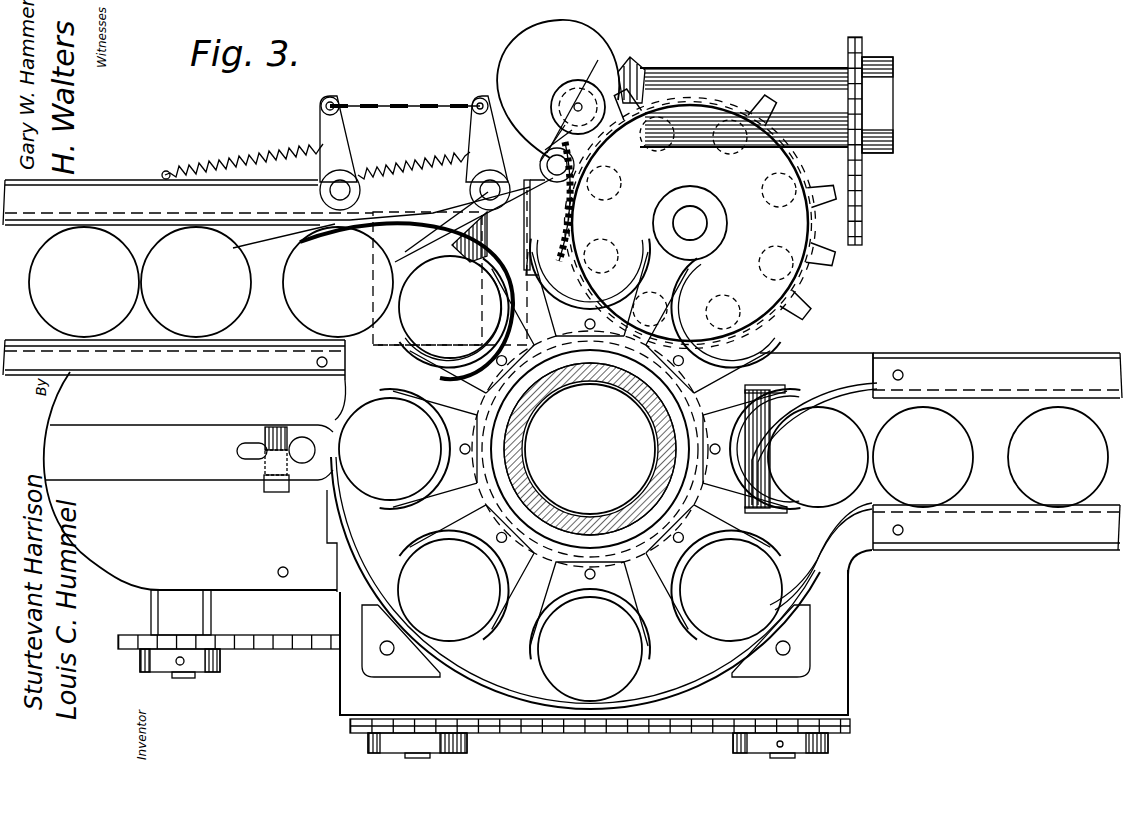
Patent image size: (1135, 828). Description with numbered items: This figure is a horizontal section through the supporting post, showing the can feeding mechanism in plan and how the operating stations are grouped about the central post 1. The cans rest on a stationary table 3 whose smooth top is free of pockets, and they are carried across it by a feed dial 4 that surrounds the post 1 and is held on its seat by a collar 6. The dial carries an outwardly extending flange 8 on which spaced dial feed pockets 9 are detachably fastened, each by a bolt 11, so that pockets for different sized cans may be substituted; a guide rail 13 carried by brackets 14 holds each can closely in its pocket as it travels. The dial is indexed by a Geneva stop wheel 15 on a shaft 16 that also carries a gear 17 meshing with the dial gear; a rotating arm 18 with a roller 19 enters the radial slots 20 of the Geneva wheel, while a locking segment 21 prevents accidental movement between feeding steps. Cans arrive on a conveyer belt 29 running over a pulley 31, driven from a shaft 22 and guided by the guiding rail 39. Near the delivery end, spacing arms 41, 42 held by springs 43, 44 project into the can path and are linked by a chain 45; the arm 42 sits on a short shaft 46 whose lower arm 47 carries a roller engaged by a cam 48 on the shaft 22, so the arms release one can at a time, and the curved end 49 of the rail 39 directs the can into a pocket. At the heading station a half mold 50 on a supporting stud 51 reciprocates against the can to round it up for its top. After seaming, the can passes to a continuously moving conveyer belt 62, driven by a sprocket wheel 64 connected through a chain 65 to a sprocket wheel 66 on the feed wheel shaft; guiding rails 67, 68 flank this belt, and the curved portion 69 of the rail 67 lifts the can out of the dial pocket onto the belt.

The central post 1 is at (527, 482).
The table 3 is at (492, 648).
The feed dial 4 is at (636, 585).
The collar 6 is at (585, 528).
The outwardly extending flange 8 is at (536, 580).
The dial feed pockets 9 is at (522, 628).
The bolt 11 is at (496, 538).
The guide rail 13 is at (360, 586).
The brackets 14 is at (396, 666).
The Geneva stop wheel 15 is at (808, 318).
The shaft 16 is at (705, 215).
The gear 17 is at (785, 305).
The rotating arm 18 is at (552, 118).
The roller 19 is at (545, 150).
The radial slots 20 is at (656, 150).
The locking segment 21 is at (636, 62).
The shaft 22 is at (582, 100).
The conveyer belt 29 is at (262, 330).
The pulley 31 is at (387, 222).
The guiding rail 39 is at (190, 232).
The spacing arm 41 is at (258, 240).
The spacing arm 42 is at (440, 200).
The spring 43 is at (300, 160).
The spring 44 is at (410, 170).
The chain 45 is at (428, 108).
The short shaft 46 is at (540, 170).
The arm 47 is at (547, 208).
The cam 48 is at (560, 38).
The curved end 49 is at (415, 283).
The half mold 50 is at (406, 437).
The supporting stud 51 is at (302, 462).
The conveyer belt 62 is at (985, 490).
The sprocket wheel 64 is at (745, 747).
The chain 65 is at (585, 734).
The sprocket wheel 66 is at (397, 745).
The guiding rail 67 is at (962, 376).
The guiding rail 68 is at (1036, 535).
The curved portion 69 is at (800, 410).